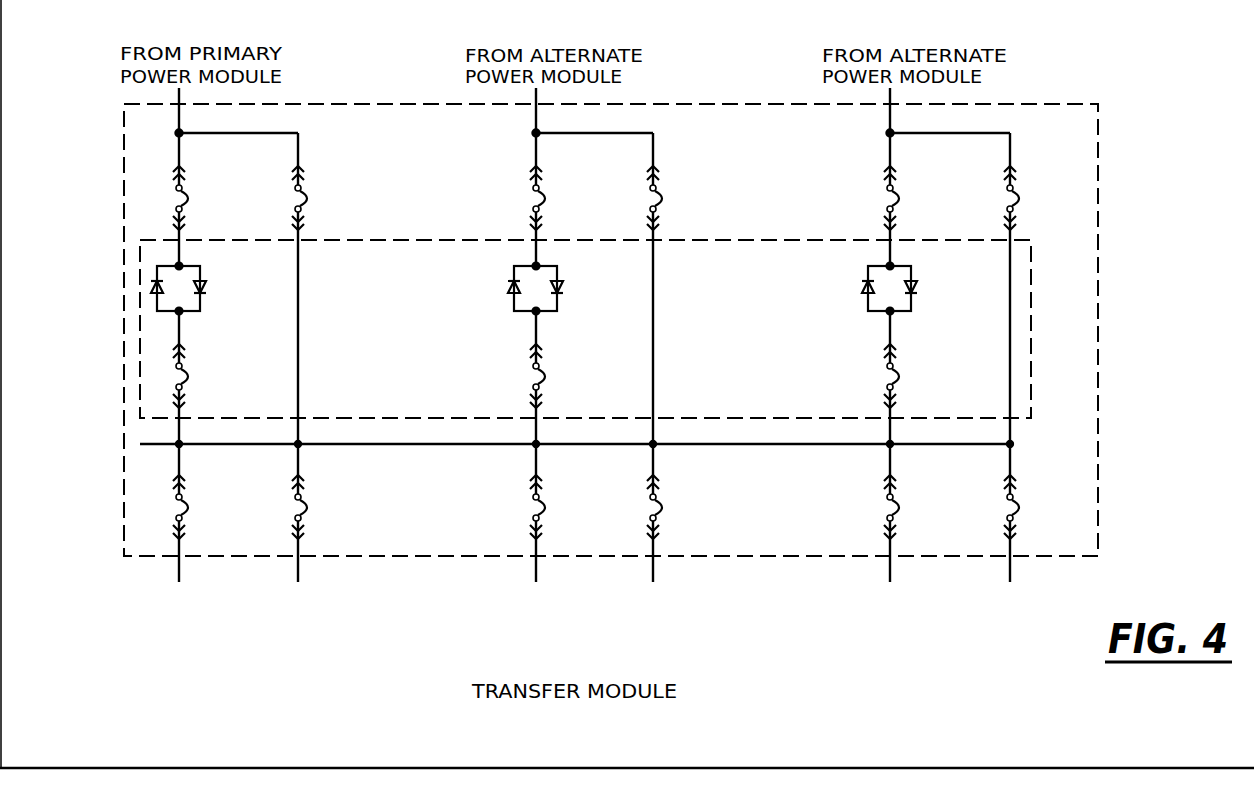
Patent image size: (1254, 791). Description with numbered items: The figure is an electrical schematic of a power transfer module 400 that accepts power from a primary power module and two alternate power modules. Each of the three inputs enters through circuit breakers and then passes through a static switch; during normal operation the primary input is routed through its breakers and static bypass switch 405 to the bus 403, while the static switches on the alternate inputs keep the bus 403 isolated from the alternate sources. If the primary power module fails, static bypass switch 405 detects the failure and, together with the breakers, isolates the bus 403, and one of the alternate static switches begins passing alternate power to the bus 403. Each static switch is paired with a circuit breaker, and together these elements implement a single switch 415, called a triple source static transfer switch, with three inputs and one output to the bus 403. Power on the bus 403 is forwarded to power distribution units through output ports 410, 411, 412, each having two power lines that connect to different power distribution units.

The power transfer module 400 is at (750, 657).
The bus 403 is at (179, 444).
The static bypass switch 405 is at (203, 273).
The output port 410 is at (325, 583).
The output port 411 is at (685, 583).
The output port 412 is at (1037, 583).
The single switch 415 is at (1031, 337).